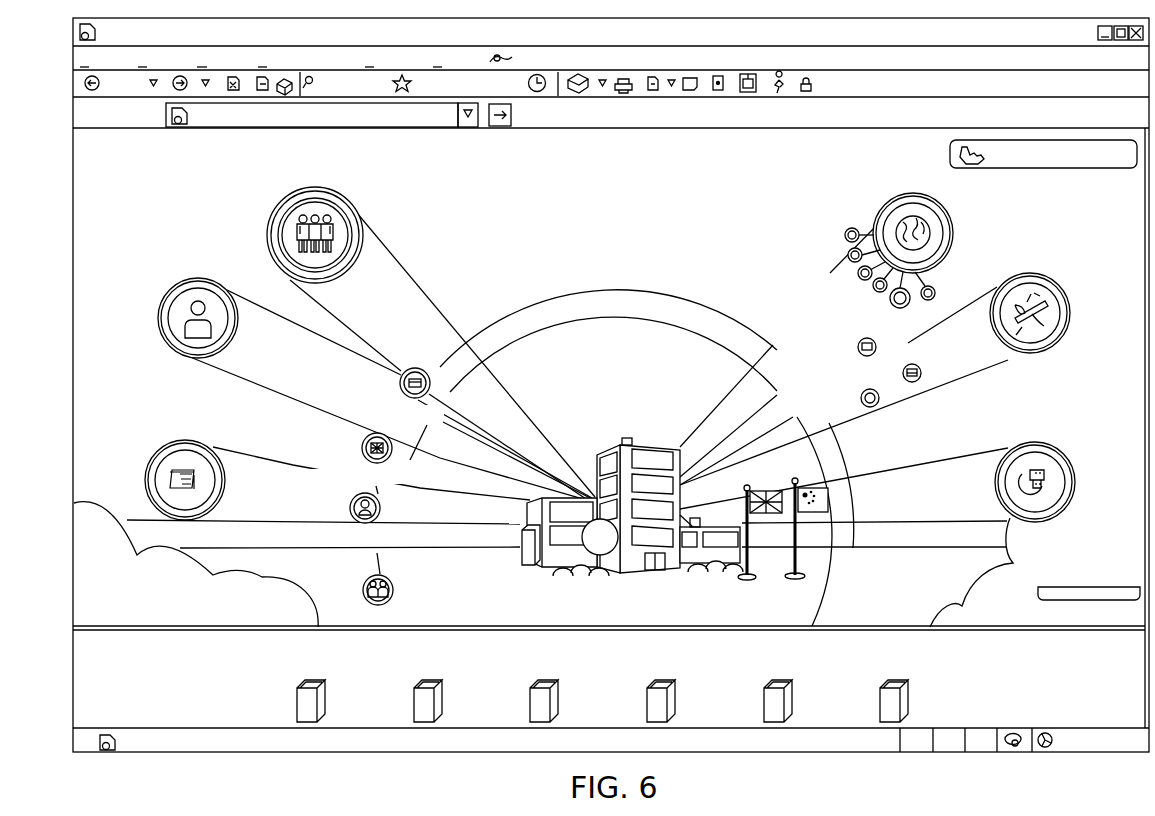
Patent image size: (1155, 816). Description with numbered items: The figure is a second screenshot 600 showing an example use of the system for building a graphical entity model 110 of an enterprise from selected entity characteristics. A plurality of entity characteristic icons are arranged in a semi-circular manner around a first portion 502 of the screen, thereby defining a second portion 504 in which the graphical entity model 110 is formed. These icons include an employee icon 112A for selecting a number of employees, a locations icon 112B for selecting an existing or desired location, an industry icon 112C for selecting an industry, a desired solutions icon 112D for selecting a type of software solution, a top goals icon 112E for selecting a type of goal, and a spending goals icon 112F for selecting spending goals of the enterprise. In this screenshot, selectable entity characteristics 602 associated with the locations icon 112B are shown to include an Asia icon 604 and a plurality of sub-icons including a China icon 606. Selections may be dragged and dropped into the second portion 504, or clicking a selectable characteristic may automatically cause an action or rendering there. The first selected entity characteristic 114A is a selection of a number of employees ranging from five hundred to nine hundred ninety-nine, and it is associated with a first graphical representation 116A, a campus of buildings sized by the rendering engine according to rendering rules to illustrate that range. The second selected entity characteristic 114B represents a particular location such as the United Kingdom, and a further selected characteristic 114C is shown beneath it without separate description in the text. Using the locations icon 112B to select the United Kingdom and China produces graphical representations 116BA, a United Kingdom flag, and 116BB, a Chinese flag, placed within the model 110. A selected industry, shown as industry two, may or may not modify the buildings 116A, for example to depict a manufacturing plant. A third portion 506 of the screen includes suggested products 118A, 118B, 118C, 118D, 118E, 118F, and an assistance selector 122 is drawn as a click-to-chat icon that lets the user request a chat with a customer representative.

The second screenshot 600 is at (212, 152).
The first portion of the screen 502 is at (173, 193).
The graphical entity model 110 is at (552, 395).
The employee icon 112A is at (267, 226).
The locations icon 112B is at (953, 233).
The industry icon 112C is at (158, 316).
The desired solutions icon 112D is at (1070, 314).
The top goals icon 112E is at (145, 472).
The spending goals icon 112F is at (1077, 480).
The first selected entity characteristic 114A is at (368, 578).
The second selected entity characteristic 114B is at (362, 440).
The industry sub-option icon 114C is at (350, 505).
The first graphical representation 116A is at (638, 574).
The graphical representation (United Kingdom flag) 116BA is at (743, 583).
The graphical representation (Chinese flag) 116BB is at (798, 558).
The suggested product 118A is at (297, 701).
The suggested product 118B is at (414, 701).
The suggested product 118C is at (530, 701).
The suggested product 118D is at (647, 701).
The suggested product 118E is at (764, 701).
The suggested product 118F is at (880, 701).
The assistance selector 122 is at (950, 153).
The second portion of the screen 504 is at (284, 539).
The third portion of the screen 506 is at (168, 694).
The selectable entity characteristics 602 is at (826, 230).
The Asia icon 604 is at (890, 299).
The China icon 606 is at (886, 352).